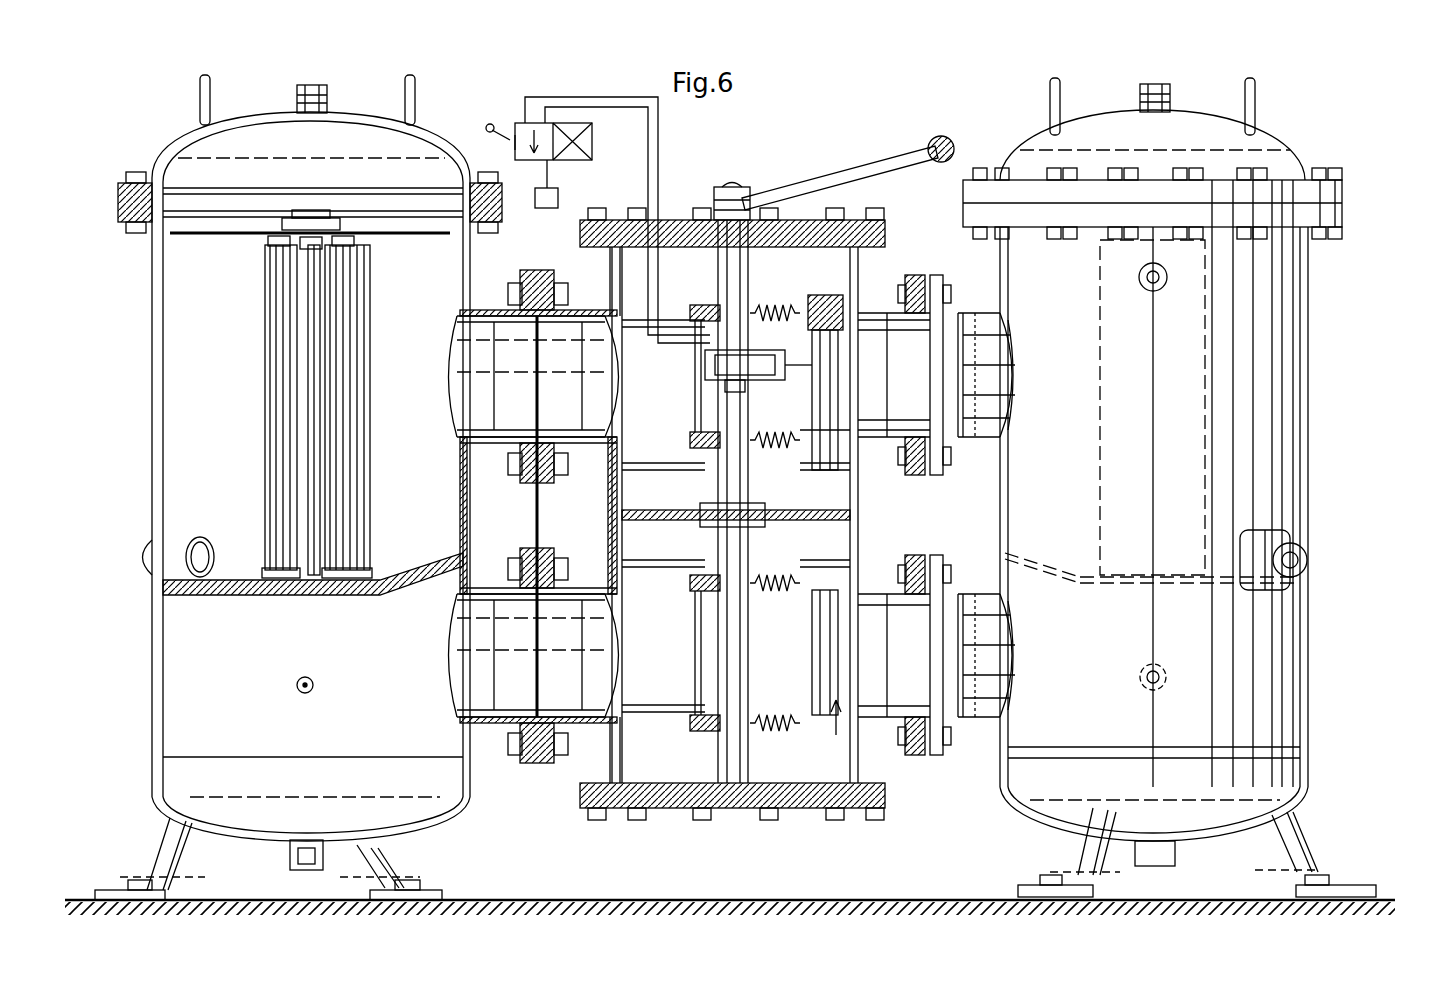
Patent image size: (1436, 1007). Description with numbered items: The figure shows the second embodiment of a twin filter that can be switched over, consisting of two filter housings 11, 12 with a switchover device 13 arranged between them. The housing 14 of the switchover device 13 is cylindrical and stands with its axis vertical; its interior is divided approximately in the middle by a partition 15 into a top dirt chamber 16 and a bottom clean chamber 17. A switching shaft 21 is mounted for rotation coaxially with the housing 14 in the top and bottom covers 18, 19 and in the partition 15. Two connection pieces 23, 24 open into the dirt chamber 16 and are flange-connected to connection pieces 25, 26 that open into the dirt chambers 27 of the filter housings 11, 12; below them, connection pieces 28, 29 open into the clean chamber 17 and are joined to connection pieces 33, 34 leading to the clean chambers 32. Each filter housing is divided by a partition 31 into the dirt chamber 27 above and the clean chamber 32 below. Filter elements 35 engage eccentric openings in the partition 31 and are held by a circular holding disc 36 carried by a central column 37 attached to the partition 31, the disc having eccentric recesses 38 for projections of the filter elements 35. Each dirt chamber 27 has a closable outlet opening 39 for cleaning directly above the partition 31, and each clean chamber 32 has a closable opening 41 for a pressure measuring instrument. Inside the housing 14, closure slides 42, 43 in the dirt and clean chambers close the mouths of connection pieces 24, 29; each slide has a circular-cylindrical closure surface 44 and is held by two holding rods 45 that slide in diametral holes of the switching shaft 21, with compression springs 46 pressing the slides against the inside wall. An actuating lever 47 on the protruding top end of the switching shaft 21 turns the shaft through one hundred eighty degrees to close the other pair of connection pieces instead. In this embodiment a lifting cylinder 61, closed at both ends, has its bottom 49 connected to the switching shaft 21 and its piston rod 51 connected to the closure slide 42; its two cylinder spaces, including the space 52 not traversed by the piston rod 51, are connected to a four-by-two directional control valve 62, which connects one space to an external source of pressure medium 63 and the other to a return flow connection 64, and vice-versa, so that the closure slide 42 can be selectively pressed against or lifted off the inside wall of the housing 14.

The filter housing 11 is at (155, 487).
The filter housing 12 is at (1270, 490).
The switchover device 13 is at (738, 822).
The housing 14 is at (613, 503).
The partition 15 is at (820, 500).
The dirt chamber 16 is at (677, 419).
The clean chamber 17 is at (677, 679).
The top cover 18 is at (675, 220).
The bottom cover 19 is at (670, 808).
The switching shaft 21 is at (738, 672).
The connection piece 23 is at (620, 414).
The connection piece 24 is at (922, 411).
The connection piece 25 is at (487, 414).
The connection piece 26 is at (985, 340).
The dirt chamber 27 is at (230, 379).
The connection piece 28 is at (620, 681).
The connection piece 29 is at (922, 681).
The partition 31 is at (230, 597).
The clean chamber 32 is at (402, 706).
The connection piece 33 is at (487, 681).
The connection piece 34 is at (990, 717).
The filter element 35 is at (348, 470).
The holding disc 36 is at (412, 240).
The central column 37 is at (300, 428).
The recess 38 is at (232, 240).
The outlet opening 39 is at (197, 548).
The opening 41 is at (297, 684).
The closure slide 42 is at (853, 436).
The closure slide 43 is at (835, 730).
The closure surface 44 is at (840, 340).
The holding rod 45 is at (705, 305).
The compression spring 46 is at (772, 305).
The actuating lever 47 is at (878, 150).
The bottom 49 is at (735, 385).
The piston rod 51 is at (830, 402).
The space 52 is at (727, 362).
The lifting cylinder 61 is at (826, 300).
The 4/2 directional control valve 62 is at (584, 144).
The external source of pressure medium 63 is at (558, 196).
The return flow connection 64 is at (505, 178).